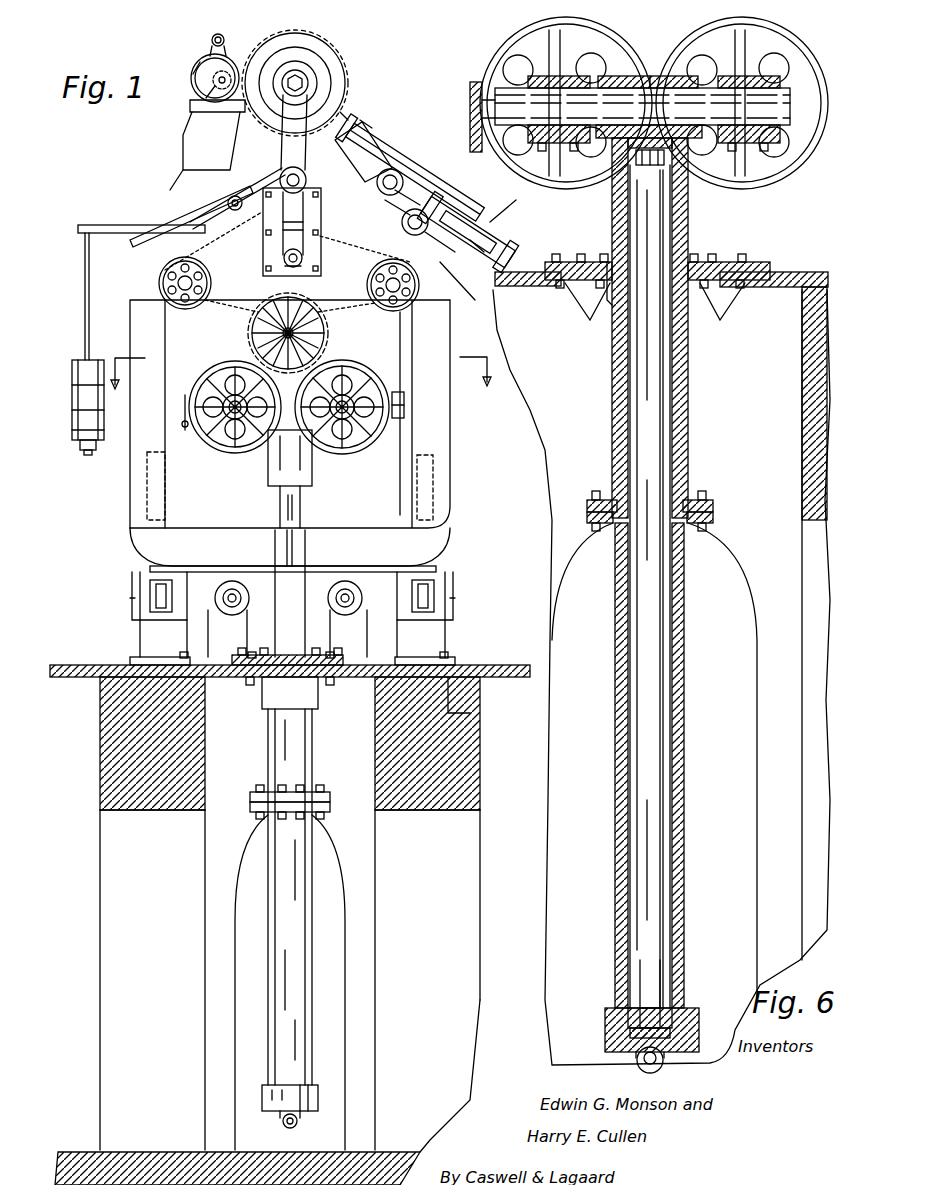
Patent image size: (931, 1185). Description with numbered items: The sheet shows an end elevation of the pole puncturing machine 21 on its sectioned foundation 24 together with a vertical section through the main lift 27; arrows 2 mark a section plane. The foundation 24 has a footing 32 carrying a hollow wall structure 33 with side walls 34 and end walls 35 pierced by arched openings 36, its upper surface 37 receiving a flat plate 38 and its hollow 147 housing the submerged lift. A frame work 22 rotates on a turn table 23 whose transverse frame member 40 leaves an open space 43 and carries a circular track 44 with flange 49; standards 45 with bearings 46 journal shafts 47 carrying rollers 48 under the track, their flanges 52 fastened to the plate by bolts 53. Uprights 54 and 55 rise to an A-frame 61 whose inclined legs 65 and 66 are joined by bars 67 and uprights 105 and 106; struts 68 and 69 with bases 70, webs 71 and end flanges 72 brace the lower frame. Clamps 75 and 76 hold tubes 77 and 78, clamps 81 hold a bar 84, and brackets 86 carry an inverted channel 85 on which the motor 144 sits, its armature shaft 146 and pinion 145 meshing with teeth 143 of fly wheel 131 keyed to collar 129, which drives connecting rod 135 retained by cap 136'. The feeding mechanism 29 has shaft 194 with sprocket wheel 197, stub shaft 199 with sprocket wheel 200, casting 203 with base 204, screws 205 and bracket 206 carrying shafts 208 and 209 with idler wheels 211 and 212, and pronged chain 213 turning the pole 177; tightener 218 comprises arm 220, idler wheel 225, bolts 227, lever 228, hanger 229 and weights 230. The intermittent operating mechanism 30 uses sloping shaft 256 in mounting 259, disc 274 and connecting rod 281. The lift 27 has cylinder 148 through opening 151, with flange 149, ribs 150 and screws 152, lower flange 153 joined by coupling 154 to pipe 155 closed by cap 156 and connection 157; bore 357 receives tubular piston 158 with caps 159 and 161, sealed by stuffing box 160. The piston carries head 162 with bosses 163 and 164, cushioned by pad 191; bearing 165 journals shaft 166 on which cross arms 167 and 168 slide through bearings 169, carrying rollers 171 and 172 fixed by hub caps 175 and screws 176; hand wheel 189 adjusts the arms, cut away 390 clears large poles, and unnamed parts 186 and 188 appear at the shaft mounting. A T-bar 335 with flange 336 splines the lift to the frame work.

In FIG. 1, the section line 2 is at (299, 381).
In FIG. 1, the pole puncturing machine 21 is at (452, 520).
In FIG. 1, the frame work 22 is at (448, 462).
In FIG. 1, the turn table 23 is at (434, 548).
In FIG. 1, the foundation 24 is at (100, 860).
In FIG. 1, the lift 27 is at (265, 458).
In FIG. 6, the lift 27 is at (607, 360).
In FIG. 1, the feeding mechanism 29 is at (216, 314).
In FIG. 1, the intermittent operating mechanism 30 is at (370, 160).
In FIG. 1, the footing 32 is at (70, 1152).
In FIG. 1, the hollow wall structure 33 is at (100, 822).
In FIG. 6, the hollow wall structure 33 is at (812, 682).
In FIG. 1, the side walls 34 is at (122, 736).
In FIG. 1, the end walls 35 is at (357, 772).
In FIG. 1, the arched openings 36 is at (132, 917).
In FIG. 6, the arched openings 36 is at (812, 765).
In FIG. 1, the upper surface 37 is at (467, 665).
In FIG. 1, the flat plate 38 is at (448, 690).
In FIG. 6, the flat plate 38 is at (786, 277).
In FIG. 1, the transverse frame member 40 is at (266, 540).
In FIG. 1, the open space 43 is at (386, 460).
In FIG. 1, the circular track 44 is at (355, 567).
In FIG. 1, the standards 45 is at (147, 628).
In FIG. 1, the bearings 46 is at (230, 584).
In FIG. 1, the horizontal shafts 47 is at (452, 602).
In FIG. 1, the rollers 48 is at (168, 574).
In FIG. 1, the outwardly extending flange 49 is at (272, 578).
In FIG. 1, the flanges 52 is at (153, 662).
In FIG. 1, the bolts 53 is at (185, 657).
In FIG. 1, the upright 54 is at (135, 500).
In FIG. 1, the upright 55 is at (440, 477).
In FIG. 1, the A-frame 61 is at (212, 204).
In FIG. 1, the inclined leg 65 is at (195, 218).
In FIG. 1, the inclined leg 66 is at (400, 175).
In FIG. 1, the bars 67 is at (244, 312).
In FIG. 1, the strut 68 is at (147, 478).
In FIG. 1, the strut 69 is at (430, 490).
In FIG. 1, the bases 70 is at (456, 510).
In FIG. 1, the webs 71 is at (147, 490).
In FIG. 1, the end flanges 72 is at (147, 460).
In FIG. 1, the clamp 75 is at (410, 172).
In FIG. 1, the clamp 76 is at (424, 210).
In FIG. 1, the tube 77 is at (430, 205).
In FIG. 1, the tube 78 is at (436, 228).
In FIG. 1, the clamps 81 is at (368, 125).
In FIG. 1, the bar 84 is at (342, 115).
In FIG. 1, the inverted channel 85 is at (188, 128).
In FIG. 1, the brackets 86 is at (218, 140).
In FIG. 1, the uprights 105 is at (320, 238).
In FIG. 1, the uprights 106 is at (250, 300).
In FIG. 1, the circular collars 129 is at (278, 92).
In FIG. 1, the fly wheel 131 is at (326, 74).
In FIG. 1, the connecting rod 135 is at (296, 70).
In FIG. 1, the cap 136' is at (344, 59).
In FIG. 1, the gear teeth 143 is at (240, 140).
In FIG. 1, the motor 144 is at (210, 68).
In FIG. 1, the spur pinion 145 is at (210, 92).
In FIG. 1, the armature shaft 146 is at (213, 80).
In FIG. 1, the hollow 147 is at (366, 833).
In FIG. 1, the cylinder 148 is at (286, 758).
In FIG. 6, the cylinder 148 is at (682, 406).
In FIG. 1, the outwardly extending flange 149 is at (263, 675).
In FIG. 6, the outwardly extending flange 149 is at (730, 262).
In FIG. 1, the diagonal ribs 150 is at (268, 715).
In FIG. 6, the diagonal ribs 150 is at (690, 298).
In FIG. 1, the opening 151 is at (252, 675).
In FIG. 6, the opening 151 is at (562, 292).
In FIG. 1, the bolts 152 is at (338, 655).
In FIG. 6, the bolts 152 is at (758, 290).
In FIG. 1, the outwardly extending flange 153 is at (258, 796).
In FIG. 6, the outwardly extending flange 153 is at (706, 500).
In FIG. 1, the flange coupling 154 is at (260, 806).
In FIG. 6, the flange coupling 154 is at (708, 513).
In FIG. 1, the pipe 155 is at (280, 928).
In FIG. 6, the pipe 155 is at (686, 641).
In FIG. 1, the cap 156 is at (318, 1095).
In FIG. 6, the cap 156 is at (606, 1036).
In FIG. 1, the pipe connection 157 is at (298, 1120).
In FIG. 6, the pipe connection 157 is at (662, 1062).
In FIG. 1, the tubular piston 158 is at (298, 519).
In FIG. 6, the tubular piston 158 is at (673, 735).
In FIG. 6, the cap 159 is at (658, 1010).
In FIG. 6, the stuffing box 160 is at (607, 300).
In FIG. 6, the cap 161 is at (682, 190).
In FIG. 1, the head 162 is at (280, 470).
In FIG. 6, the head 162 is at (726, 120).
In FIG. 1, the vertically extending boss 163 is at (304, 482).
In FIG. 6, the vertically extending boss 163 is at (613, 220).
In FIG. 6, the horizontally extending boss 164 is at (690, 88).
In FIG. 6, the bearing 165 is at (700, 82).
In FIG. 1, the transverse horizontal shaft 166 is at (410, 406).
In FIG. 6, the transverse horizontal shaft 166 is at (776, 98).
In FIG. 6, the cross arm 167 is at (588, 78).
In FIG. 6, the cross arm 168 is at (760, 60).
In FIG. 6, the bearings 169 is at (542, 73).
In FIG. 1, the rollers 171 is at (206, 442).
In FIG. 6, the rollers 171 is at (524, 48).
In FIG. 1, the rollers 172 is at (356, 446).
In FIG. 6, the rollers 172 is at (698, 77).
In FIG. 1, the hub caps 175 is at (240, 420).
In FIG. 1, the cap screws 176 is at (226, 370).
In FIG. 1, the pole 177 is at (327, 340).
In FIG. 6, the bearing 186 is at (550, 143).
In FIG. 6, the bearing bolt 188 is at (567, 145).
In FIG. 1, the hand wheel 189 is at (185, 424).
In FIG. 6, the hand wheel 189 is at (478, 96).
In FIG. 6, the resilient pad 191 is at (612, 192).
In FIG. 1, the shaft 194 is at (415, 307).
In FIG. 1, the sprocket wheels 197 is at (336, 302).
In FIG. 1, the stub shafts 199 is at (135, 310).
In FIG. 1, the sprocket wheels 200 is at (160, 258).
In FIG. 1, the castings 203 is at (368, 285).
In FIG. 1, the plate-like bases 204 is at (318, 202).
In FIG. 1, the cap screws 205 is at (280, 232).
In FIG. 1, the bracket 206 is at (320, 110).
In FIG. 1, the short shaft 208 is at (278, 112).
In FIG. 1, the short shaft 209 is at (320, 222).
In FIG. 1, the idler sprocket wheel 211 is at (293, 254).
In FIG. 1, the idler wheel 212 is at (318, 262).
In FIG. 1, the chain 213 is at (422, 296).
In FIG. 1, the chain tightener 218 is at (80, 222).
In FIG. 1, the arm 220 is at (246, 214).
In FIG. 1, the idler wheel 225 is at (218, 216).
In FIG. 1, the bolts 227 is at (176, 230).
In FIG. 1, the lever 228 is at (100, 225).
In FIG. 1, the hanger 229 is at (86, 308).
In FIG. 1, the weights 230 is at (78, 378).
In FIG. 1, the downwardly sloping shaft 256 is at (460, 205).
In FIG. 1, the mounting 259 is at (478, 248).
In FIG. 1, the disc 274 is at (498, 208).
In FIG. 1, the connecting rod 281 is at (468, 284).
In FIG. 1, the T-bar 335 is at (414, 356).
In FIG. 1, the flange 336 is at (404, 440).
In FIG. 6, the bore 357 is at (680, 447).
In FIG. 6, the cut away 390 is at (644, 76).